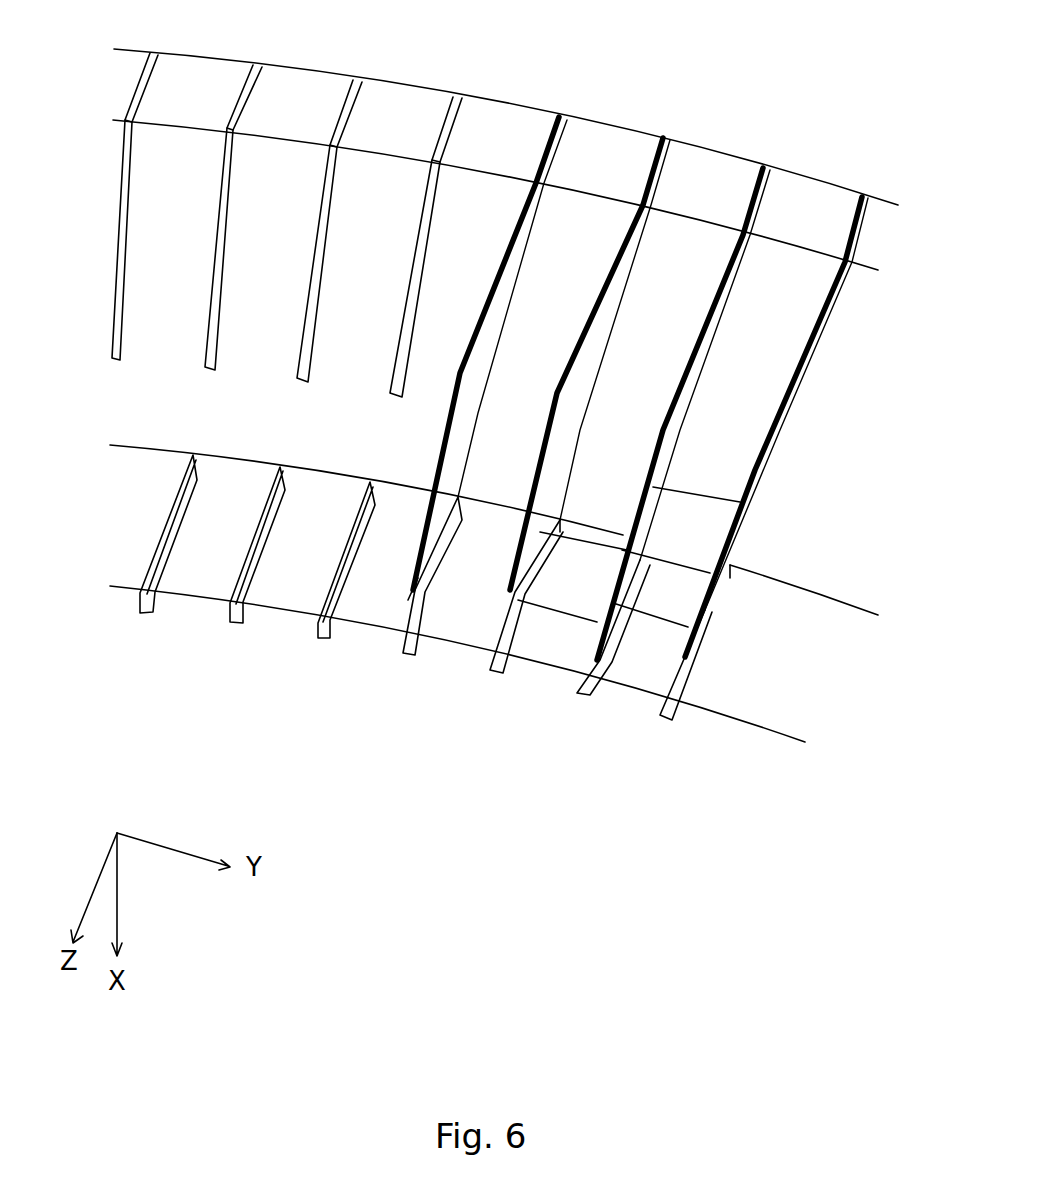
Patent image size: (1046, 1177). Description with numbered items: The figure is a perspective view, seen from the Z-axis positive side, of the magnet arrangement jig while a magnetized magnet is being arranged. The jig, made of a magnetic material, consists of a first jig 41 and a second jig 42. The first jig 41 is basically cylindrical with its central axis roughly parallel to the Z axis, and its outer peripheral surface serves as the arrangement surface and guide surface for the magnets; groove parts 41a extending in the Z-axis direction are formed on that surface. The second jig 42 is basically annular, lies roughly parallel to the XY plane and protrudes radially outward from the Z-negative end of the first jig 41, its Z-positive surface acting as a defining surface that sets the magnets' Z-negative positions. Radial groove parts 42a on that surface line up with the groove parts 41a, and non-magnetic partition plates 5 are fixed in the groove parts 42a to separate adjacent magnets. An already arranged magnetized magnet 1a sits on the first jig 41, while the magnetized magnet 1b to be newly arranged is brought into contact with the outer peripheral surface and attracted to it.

The second jig 42 is at (561, 84).
The groove part 42a is at (340, 122).
The first jig 41 is at (772, 789).
The groove part 41a is at (232, 628).
The partition plate 5 is at (412, 580).
The already arranged magnetized magnet 1a is at (637, 602).
The magnetized magnet to be newly arranged 1b is at (568, 657).